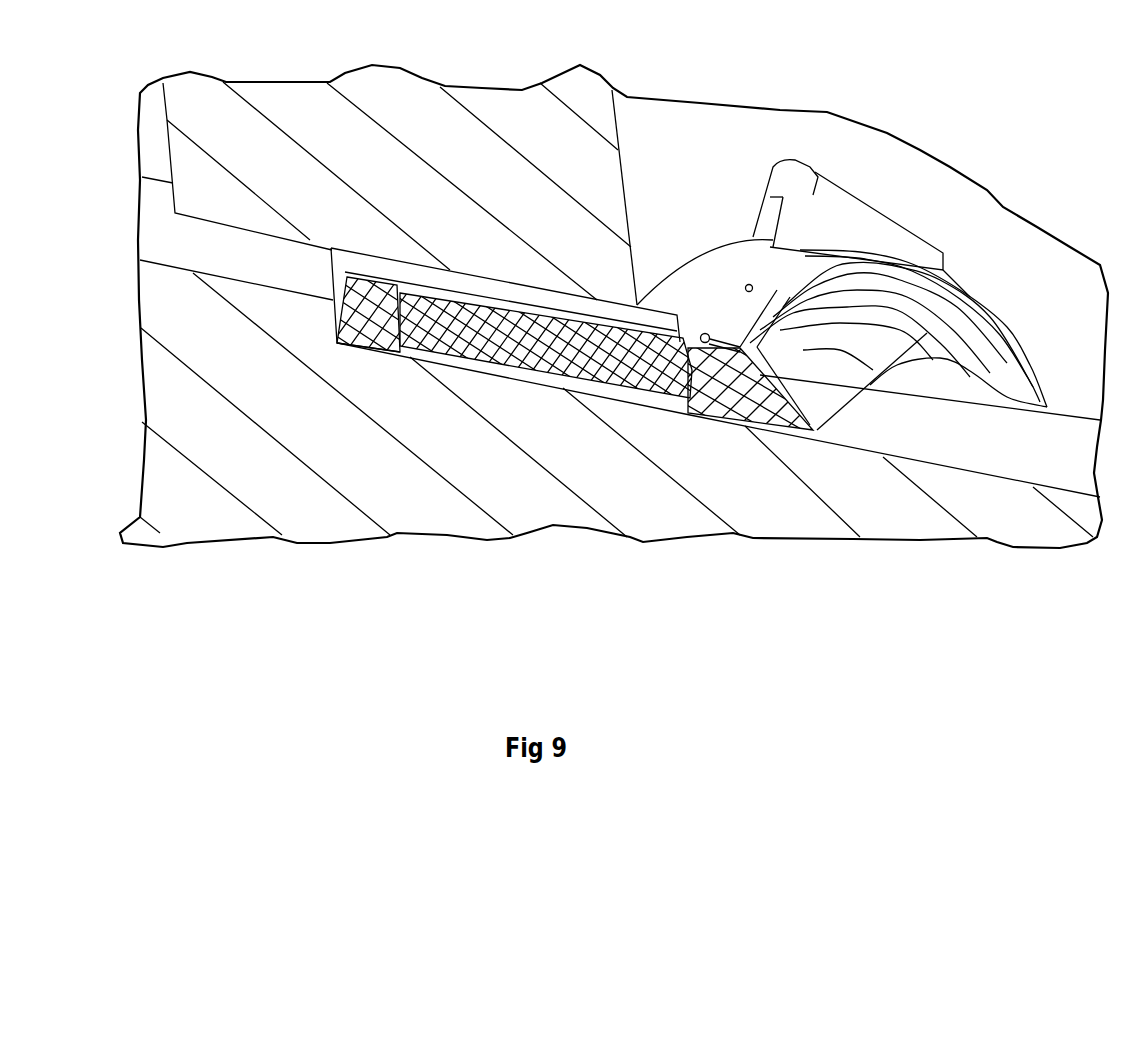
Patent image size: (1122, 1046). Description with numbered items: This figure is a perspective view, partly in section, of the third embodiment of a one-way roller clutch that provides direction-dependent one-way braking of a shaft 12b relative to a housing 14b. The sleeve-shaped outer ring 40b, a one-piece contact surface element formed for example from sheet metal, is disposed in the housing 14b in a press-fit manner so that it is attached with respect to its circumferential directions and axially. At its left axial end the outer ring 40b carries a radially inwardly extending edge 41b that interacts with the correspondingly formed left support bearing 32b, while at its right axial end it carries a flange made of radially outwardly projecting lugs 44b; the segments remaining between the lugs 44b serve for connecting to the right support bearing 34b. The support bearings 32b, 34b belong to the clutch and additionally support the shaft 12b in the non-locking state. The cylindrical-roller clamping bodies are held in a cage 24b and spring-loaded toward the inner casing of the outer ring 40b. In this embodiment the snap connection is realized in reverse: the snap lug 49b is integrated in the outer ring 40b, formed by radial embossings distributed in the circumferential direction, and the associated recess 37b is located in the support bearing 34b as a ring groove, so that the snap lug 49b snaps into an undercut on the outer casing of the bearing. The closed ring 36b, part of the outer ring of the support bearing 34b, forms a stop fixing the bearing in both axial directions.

The shaft 12b is at (193, 390).
The housing 14b is at (275, 147).
The radially inwardly extending edge 41b is at (333, 282).
The left support bearing 32b is at (352, 340).
The outer ring 40b is at (410, 345).
The cage 24b is at (532, 320).
The recess 37b is at (718, 408).
The snap lug 49b is at (703, 343).
The ring 36b is at (787, 292).
The lugs 44b is at (810, 193).
The right support bearing 34b is at (840, 370).